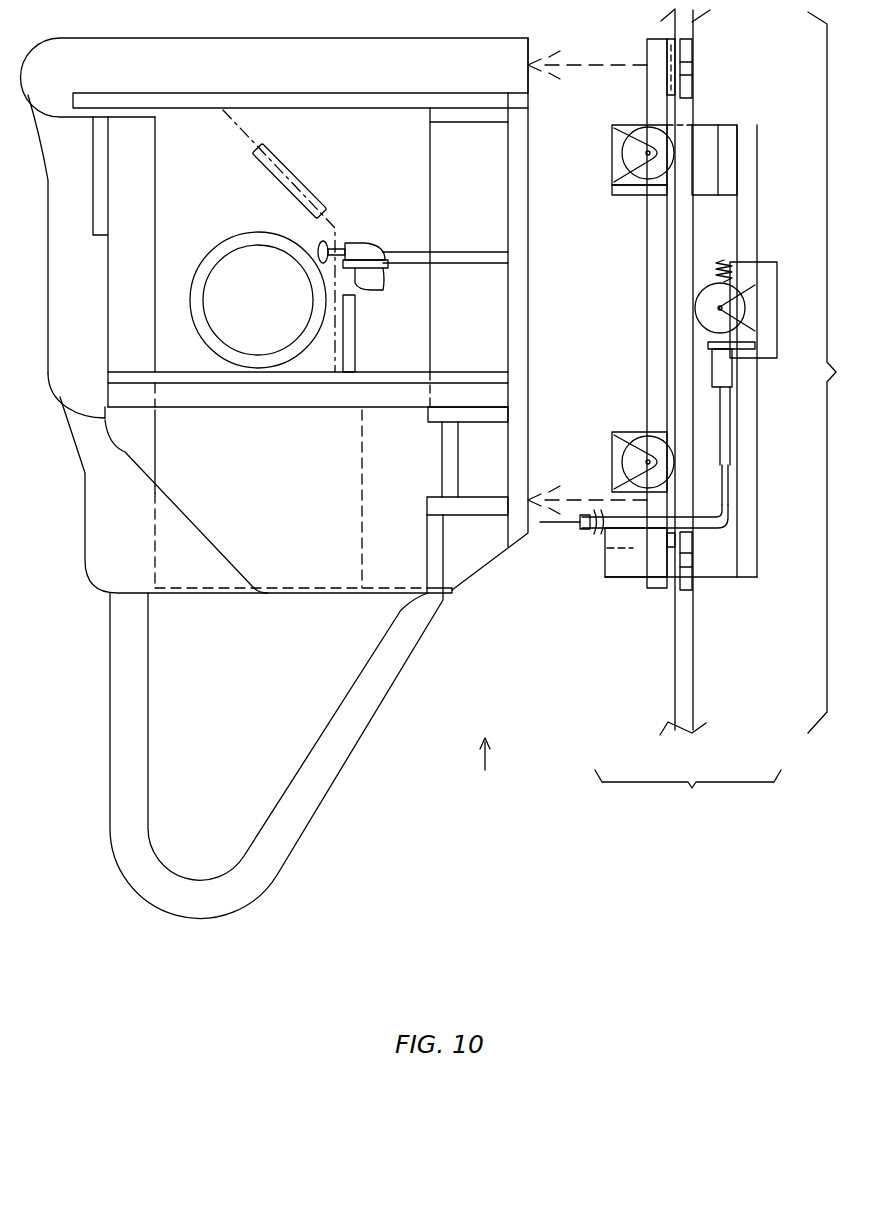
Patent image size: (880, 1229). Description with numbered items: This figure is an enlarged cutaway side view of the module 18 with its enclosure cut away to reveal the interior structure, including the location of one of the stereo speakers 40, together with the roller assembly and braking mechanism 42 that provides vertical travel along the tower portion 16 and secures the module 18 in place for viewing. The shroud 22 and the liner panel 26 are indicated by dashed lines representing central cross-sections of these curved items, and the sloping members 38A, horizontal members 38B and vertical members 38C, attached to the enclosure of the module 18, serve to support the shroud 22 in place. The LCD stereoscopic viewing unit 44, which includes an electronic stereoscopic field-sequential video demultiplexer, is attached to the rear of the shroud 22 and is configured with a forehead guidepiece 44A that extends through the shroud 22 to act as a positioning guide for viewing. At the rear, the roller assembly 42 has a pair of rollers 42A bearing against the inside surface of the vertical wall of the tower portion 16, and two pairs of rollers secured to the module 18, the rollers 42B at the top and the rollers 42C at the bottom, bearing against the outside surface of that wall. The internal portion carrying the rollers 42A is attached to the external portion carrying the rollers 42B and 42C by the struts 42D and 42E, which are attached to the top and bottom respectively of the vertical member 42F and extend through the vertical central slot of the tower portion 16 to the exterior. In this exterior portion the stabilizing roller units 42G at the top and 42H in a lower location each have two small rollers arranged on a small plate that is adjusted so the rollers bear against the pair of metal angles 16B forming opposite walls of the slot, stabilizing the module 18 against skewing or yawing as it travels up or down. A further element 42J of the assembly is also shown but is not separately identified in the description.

The tower portion 16 is at (700, 642).
The metal angles 16B is at (687, 697).
The module 18 is at (485, 770).
The shroud 22 is at (328, 228).
The liner panel 26 is at (358, 506).
The sloping members 38A is at (268, 186).
The horizontal members 38B is at (412, 255).
The vertical members 38C is at (350, 340).
The stereo speaker 40 is at (272, 315).
The roller assembly and braking mechanism 42 is at (732, 415).
The rollers 42A is at (705, 300).
The rollers 42B is at (640, 130).
The rollers 42C is at (640, 432).
The strut 42D is at (708, 135).
The strut 42E is at (708, 555).
The vertical member 42F is at (748, 236).
The stabilizing roller unit 42G is at (668, 45).
The stabilizing roller unit 42H is at (674, 592).
The spring housing 42J is at (775, 340).
The LCD stereoscopic viewing unit 44 is at (375, 290).
The forehead guidepiece 44A is at (320, 240).